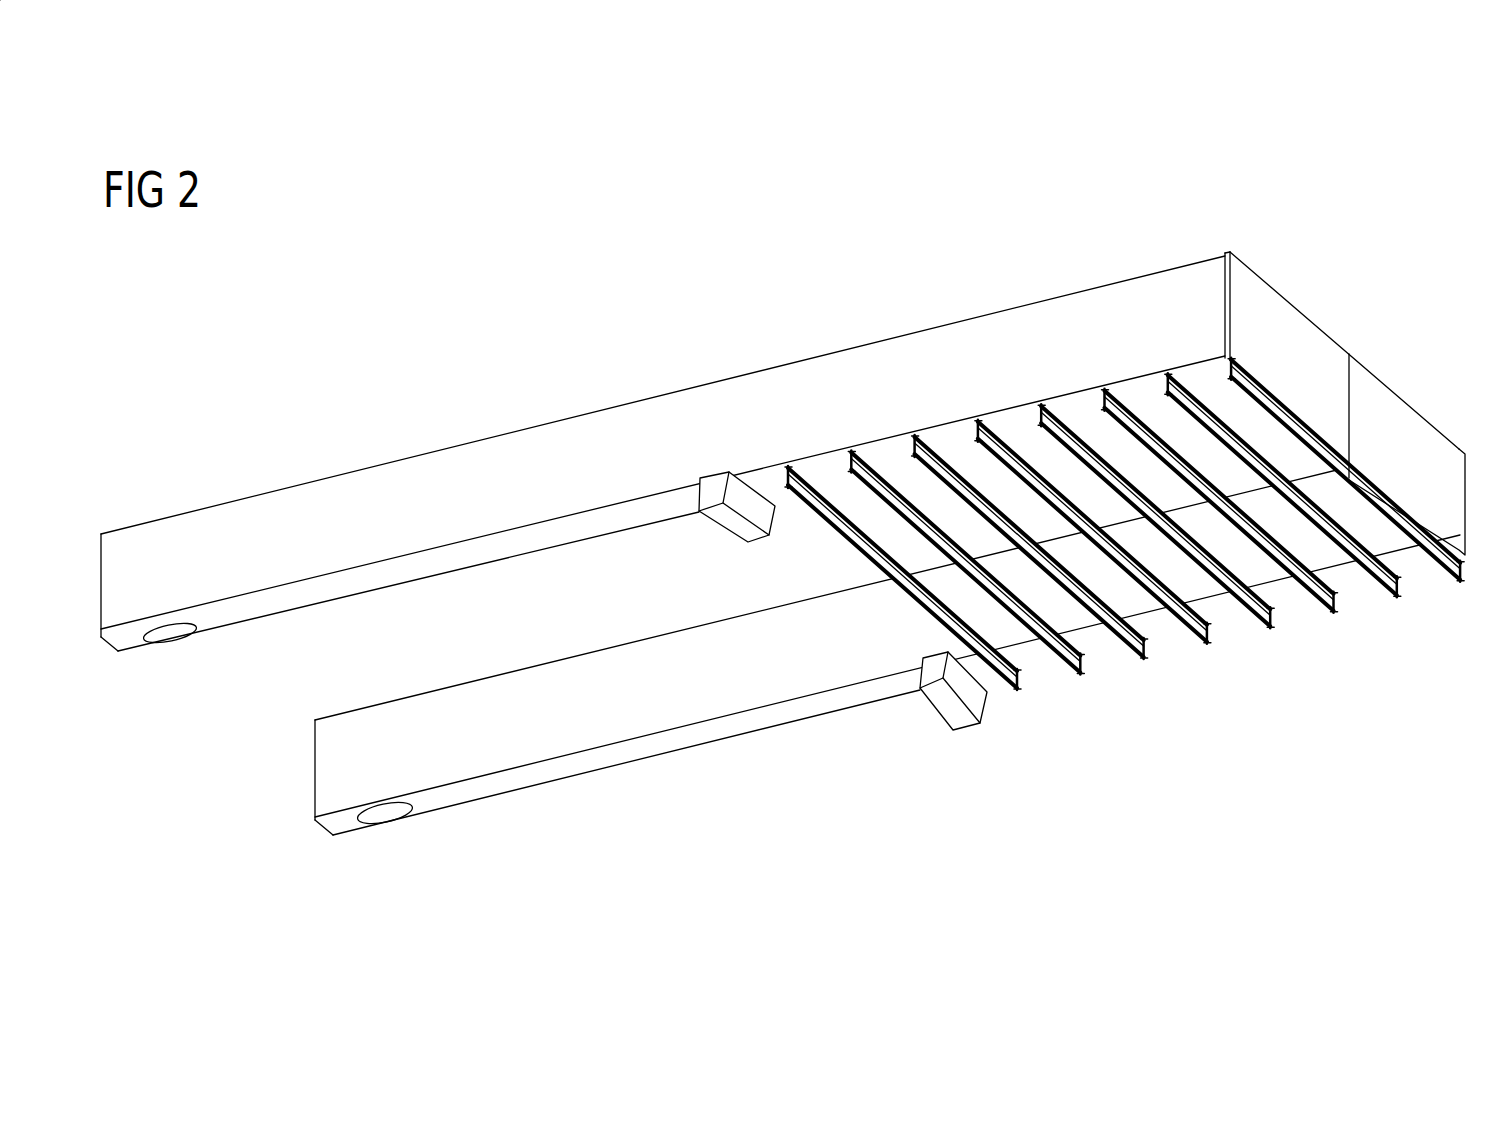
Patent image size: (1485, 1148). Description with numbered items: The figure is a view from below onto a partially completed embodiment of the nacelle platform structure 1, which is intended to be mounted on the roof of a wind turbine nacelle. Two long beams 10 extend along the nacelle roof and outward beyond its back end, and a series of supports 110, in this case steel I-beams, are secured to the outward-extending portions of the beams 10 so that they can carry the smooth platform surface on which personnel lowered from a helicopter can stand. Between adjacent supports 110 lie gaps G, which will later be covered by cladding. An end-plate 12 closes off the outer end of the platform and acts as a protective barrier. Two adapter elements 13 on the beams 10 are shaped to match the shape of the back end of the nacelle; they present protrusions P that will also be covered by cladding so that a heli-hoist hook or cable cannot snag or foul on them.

The nacelle platform structure 1 is at (1314, 242).
The beams 10 is at (458, 476).
The end-plate 12 is at (1383, 422).
The adapter elements 13 is at (707, 493).
The supports 110 is at (1272, 627).
The gaps G is at (1030, 440).
The protrusions P is at (775, 520).